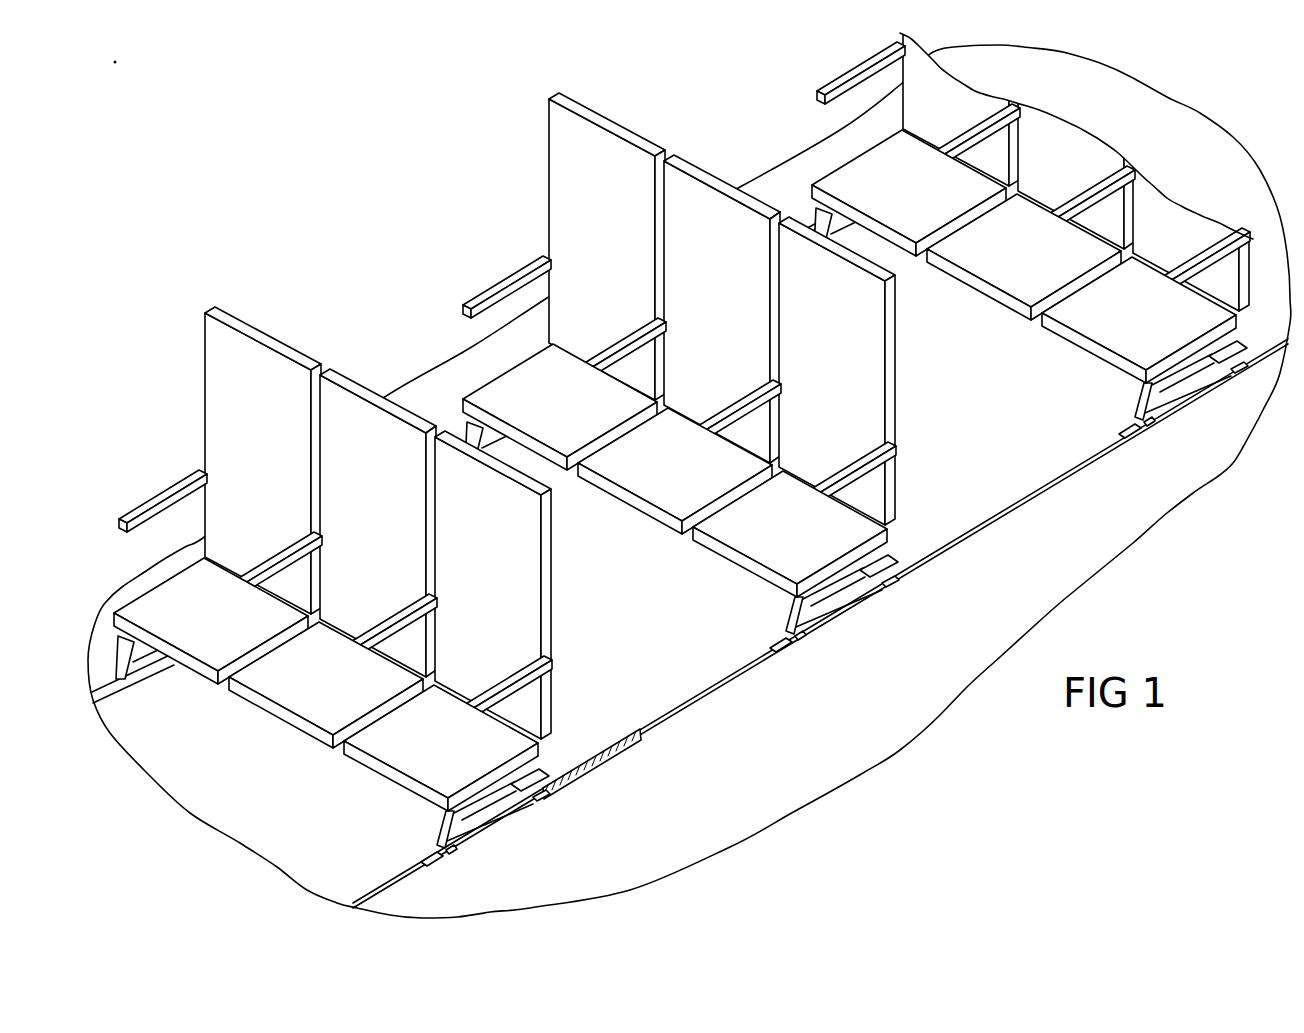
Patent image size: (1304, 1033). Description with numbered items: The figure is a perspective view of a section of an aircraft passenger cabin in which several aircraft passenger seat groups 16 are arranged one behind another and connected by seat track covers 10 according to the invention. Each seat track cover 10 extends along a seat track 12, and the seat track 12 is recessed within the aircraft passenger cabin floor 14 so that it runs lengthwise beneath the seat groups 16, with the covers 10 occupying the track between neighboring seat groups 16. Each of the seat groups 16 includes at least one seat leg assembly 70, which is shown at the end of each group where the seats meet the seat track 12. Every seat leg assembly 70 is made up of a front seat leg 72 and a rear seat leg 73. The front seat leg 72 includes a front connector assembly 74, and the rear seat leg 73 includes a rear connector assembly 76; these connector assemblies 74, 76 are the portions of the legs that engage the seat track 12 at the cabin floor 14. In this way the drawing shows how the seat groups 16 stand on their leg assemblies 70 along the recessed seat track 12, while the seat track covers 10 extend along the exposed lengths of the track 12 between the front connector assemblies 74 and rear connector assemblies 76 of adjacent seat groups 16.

The seat track cover 10 is at (642, 737).
The seat track 12 is at (585, 774).
The aircraft passenger cabin floor 14 is at (272, 846).
The aircraft passenger seat group 16 is at (218, 400).
The seat leg assembly 70 is at (428, 835).
The front seat leg 72 is at (432, 849).
The rear seat leg 73 is at (541, 789).
The front connector assembly 74 is at (448, 862).
The rear connector assembly 76 is at (548, 801).